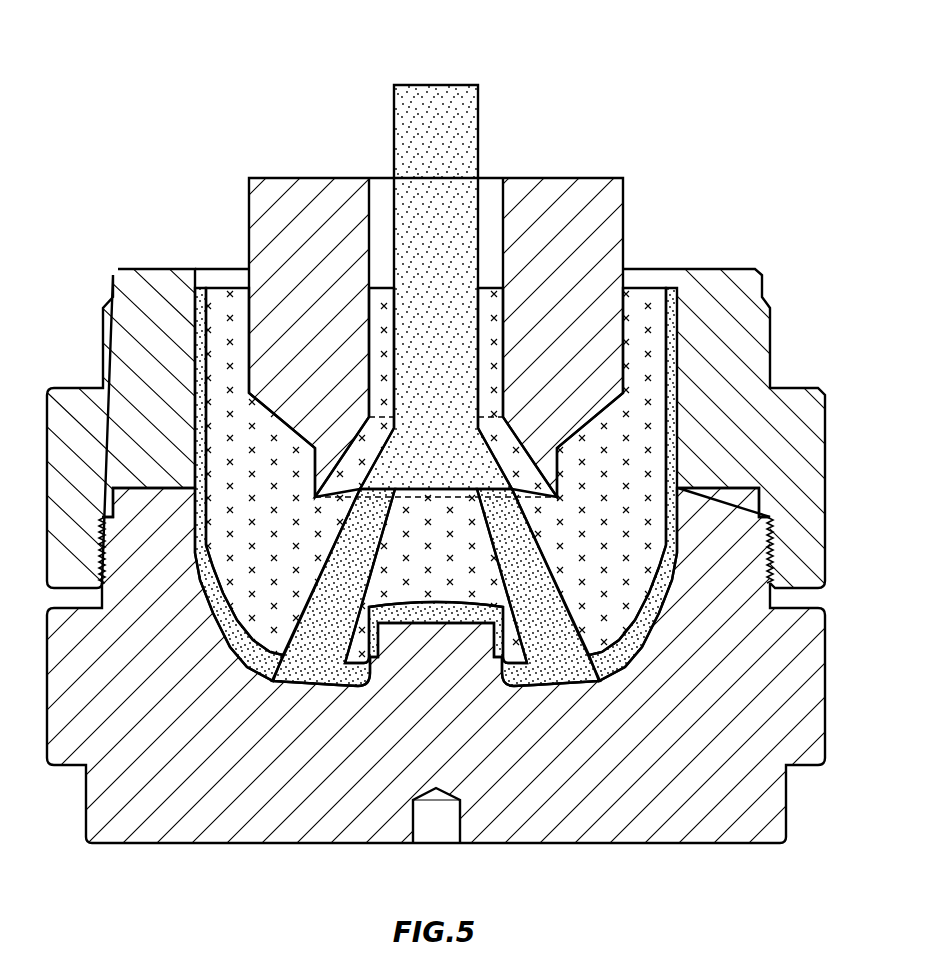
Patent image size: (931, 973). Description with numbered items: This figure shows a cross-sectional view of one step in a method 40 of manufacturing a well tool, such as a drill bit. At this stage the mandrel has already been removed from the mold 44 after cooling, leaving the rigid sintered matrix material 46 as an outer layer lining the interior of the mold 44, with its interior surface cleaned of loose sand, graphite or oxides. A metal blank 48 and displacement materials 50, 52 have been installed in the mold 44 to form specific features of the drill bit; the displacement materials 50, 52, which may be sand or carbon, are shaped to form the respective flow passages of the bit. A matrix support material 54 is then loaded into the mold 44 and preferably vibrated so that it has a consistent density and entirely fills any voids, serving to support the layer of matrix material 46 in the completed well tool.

The method 40 is at (699, 158).
The mold 44 is at (148, 268).
The rigid sintered matrix material 46 is at (671, 288).
The metal blank 48 is at (298, 178).
The displacement material 50 is at (421, 83).
The displacement material 52 is at (317, 592).
The matrix support material 54 is at (632, 288).